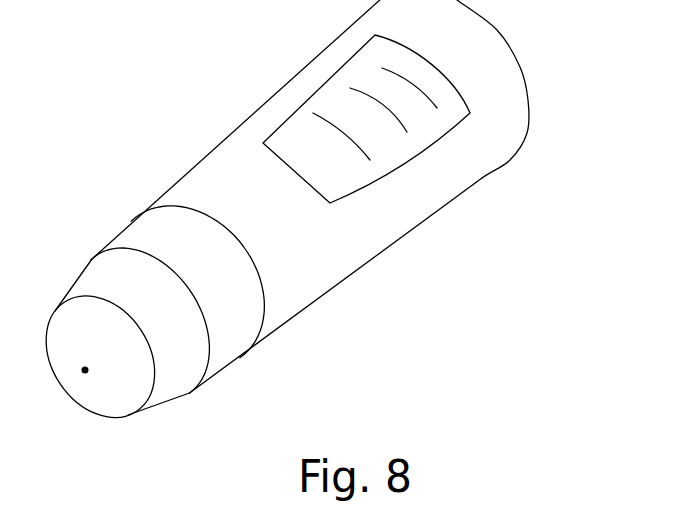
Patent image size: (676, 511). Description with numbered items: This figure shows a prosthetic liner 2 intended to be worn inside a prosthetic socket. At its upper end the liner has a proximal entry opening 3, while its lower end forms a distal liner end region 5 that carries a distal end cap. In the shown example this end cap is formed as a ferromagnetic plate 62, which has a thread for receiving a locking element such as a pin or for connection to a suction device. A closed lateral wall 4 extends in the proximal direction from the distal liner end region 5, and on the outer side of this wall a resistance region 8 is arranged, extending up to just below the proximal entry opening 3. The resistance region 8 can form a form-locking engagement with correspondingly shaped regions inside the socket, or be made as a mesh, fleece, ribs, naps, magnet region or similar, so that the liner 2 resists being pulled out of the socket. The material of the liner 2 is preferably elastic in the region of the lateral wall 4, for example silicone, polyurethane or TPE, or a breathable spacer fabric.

The prosthetic liner 2 is at (313, 251).
The proximal entry opening 3 is at (531, 85).
The closed lateral wall 4 is at (342, 250).
The distal liner end region 5 is at (190, 403).
The resistance region 8 is at (333, 107).
The ferromagnetic plate 62 is at (127, 390).